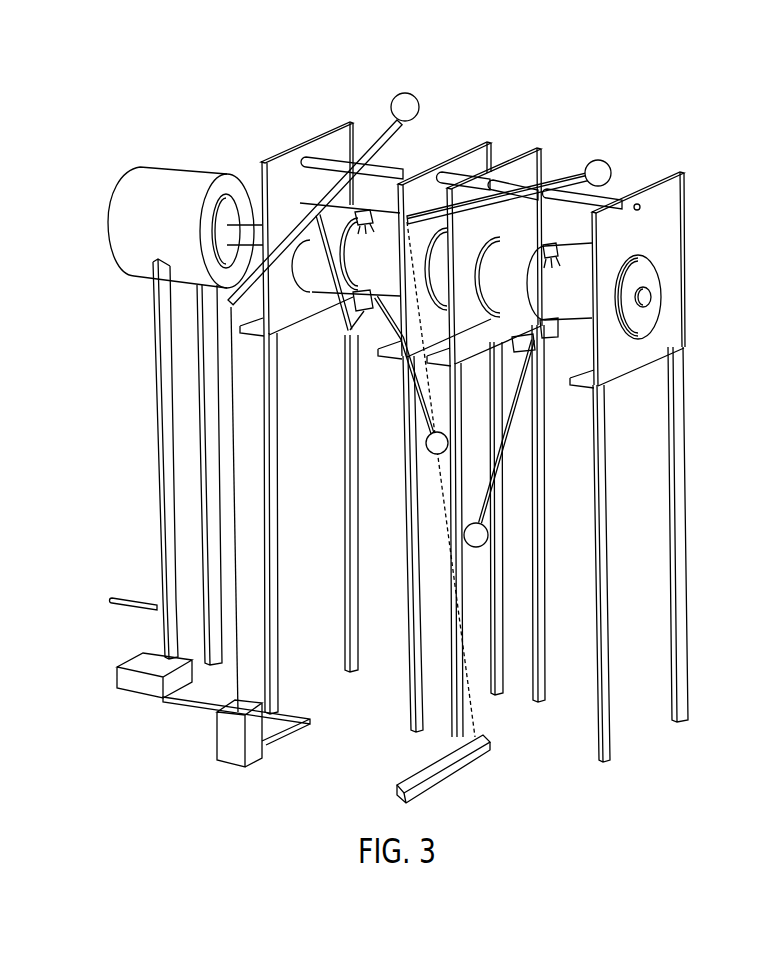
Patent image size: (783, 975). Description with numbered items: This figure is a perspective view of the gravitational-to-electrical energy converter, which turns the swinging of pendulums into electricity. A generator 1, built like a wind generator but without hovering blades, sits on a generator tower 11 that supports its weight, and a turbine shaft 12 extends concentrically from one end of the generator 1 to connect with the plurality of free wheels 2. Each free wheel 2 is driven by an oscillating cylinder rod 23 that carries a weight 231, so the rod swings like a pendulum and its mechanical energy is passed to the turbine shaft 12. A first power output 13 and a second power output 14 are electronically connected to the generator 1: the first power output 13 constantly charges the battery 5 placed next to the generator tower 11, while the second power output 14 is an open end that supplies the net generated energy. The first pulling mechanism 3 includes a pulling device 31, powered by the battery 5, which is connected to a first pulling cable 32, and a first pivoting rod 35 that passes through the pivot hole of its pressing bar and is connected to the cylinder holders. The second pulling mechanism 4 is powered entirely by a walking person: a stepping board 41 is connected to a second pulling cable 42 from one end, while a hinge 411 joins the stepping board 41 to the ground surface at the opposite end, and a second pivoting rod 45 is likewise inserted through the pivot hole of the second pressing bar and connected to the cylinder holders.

The generator 1 is at (130, 198).
The turbine shaft 12 is at (246, 227).
The generator tower 11 is at (157, 508).
The first power output 13 is at (163, 635).
The second power output 14 is at (122, 598).
The free wheel 2 is at (320, 282).
The cylinder rod 23 is at (390, 334).
The weight 231 is at (430, 447).
The first pulling mechanism 3 is at (363, 138).
The first pivoting rod 35 is at (330, 157).
The first pulling cable 32 is at (236, 533).
The pulling device 31 is at (223, 733).
The second pulling mechanism 4 is at (574, 172).
The second pivoting rod 45 is at (600, 198).
The second pulling cable 42 is at (470, 710).
The stepping board 41 is at (463, 769).
The plate bottom 411 is at (430, 792).
The battery 5 is at (138, 690).